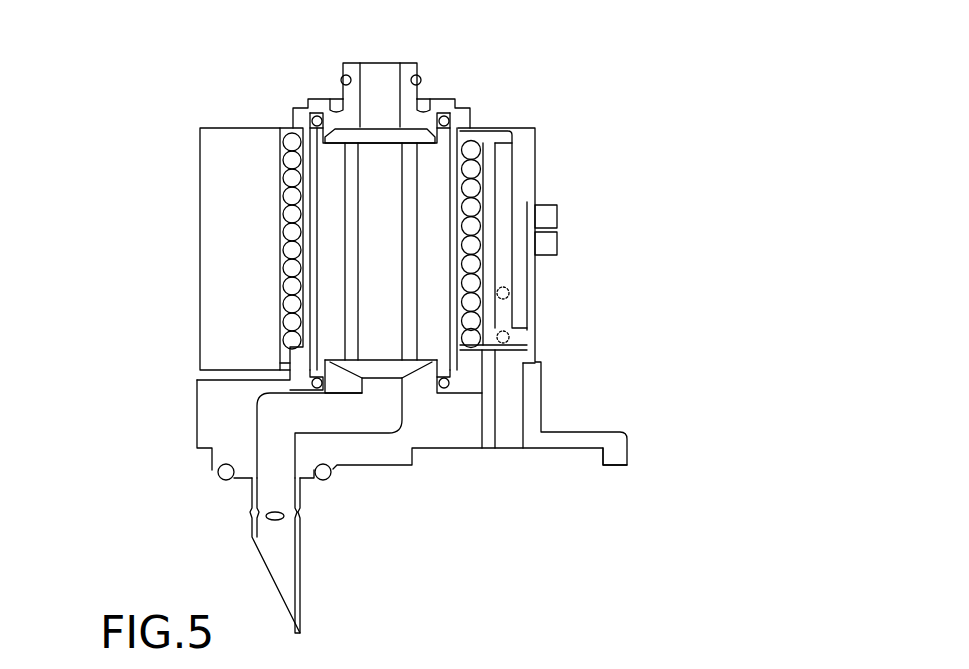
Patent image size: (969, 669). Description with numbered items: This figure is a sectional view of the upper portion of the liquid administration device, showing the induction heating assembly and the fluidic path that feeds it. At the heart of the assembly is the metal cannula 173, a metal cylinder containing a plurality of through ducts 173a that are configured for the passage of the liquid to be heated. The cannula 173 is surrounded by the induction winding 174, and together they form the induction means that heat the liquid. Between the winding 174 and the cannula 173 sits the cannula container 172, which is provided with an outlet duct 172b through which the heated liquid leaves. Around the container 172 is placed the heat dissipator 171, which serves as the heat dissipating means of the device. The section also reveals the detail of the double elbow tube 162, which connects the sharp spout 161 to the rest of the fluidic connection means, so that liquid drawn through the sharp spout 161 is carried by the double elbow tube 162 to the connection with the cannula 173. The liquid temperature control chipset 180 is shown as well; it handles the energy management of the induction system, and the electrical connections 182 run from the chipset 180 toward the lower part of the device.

The sharp spout 161 is at (300, 573).
The double elbow tube 162 is at (355, 415).
The heat dissipator 171 is at (240, 270).
The cannula container 172 is at (453, 138).
The cannula container outlet duct 172b is at (422, 72).
The metal cannula 173 is at (225, 278).
The through ducts 173a is at (407, 328).
The induction winding 174 is at (290, 138).
The liquid temperature control chipset 180 is at (577, 290).
The electrical connections 182 is at (617, 455).